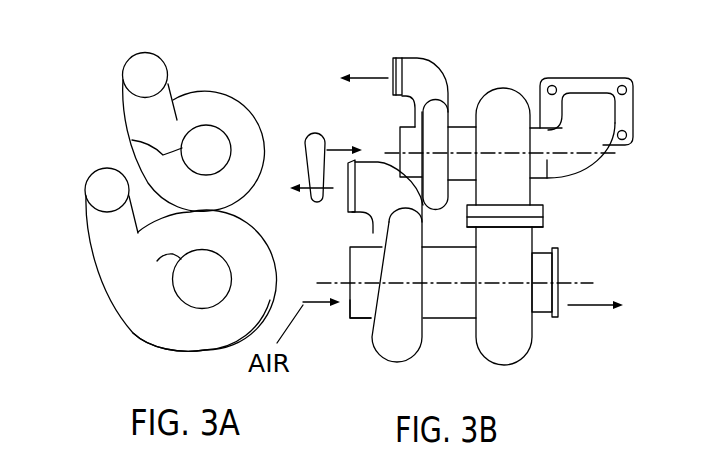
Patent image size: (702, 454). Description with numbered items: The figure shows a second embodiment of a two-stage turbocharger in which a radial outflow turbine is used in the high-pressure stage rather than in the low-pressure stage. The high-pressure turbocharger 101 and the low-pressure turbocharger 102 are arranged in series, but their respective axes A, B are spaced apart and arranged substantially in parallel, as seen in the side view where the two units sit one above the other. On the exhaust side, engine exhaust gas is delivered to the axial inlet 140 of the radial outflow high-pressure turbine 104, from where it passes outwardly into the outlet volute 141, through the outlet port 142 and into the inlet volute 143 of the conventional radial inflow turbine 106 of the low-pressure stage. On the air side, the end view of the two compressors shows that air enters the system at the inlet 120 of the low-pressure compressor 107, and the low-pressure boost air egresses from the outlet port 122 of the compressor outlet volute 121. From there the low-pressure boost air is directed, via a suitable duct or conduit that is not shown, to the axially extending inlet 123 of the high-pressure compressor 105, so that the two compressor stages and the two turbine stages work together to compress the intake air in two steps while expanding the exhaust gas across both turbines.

In FIG. 3B, the high-pressure turbocharger 101 is at (505, 84).
In FIG. 3B, the low-pressure turbocharger 102 is at (507, 372).
In FIG. 3B, the radial outflow high-pressure turbine 104 is at (485, 97).
In FIG. 3A, the high-pressure compressor 105 is at (198, 102).
In FIG. 3B, the high-pressure compressor 105 is at (430, 62).
In FIG. 3B, the radial inflow turbine 106 is at (533, 333).
In FIG. 3A, the low-pressure compressor 107 is at (137, 297).
In FIG. 3B, the low-pressure compressor 107 is at (377, 230).
In FIG. 3A, the inlet 120 is at (149, 264).
In FIG. 3B, the inlet 120 is at (358, 307).
In FIG. 3A, the compressor outlet volute 121 is at (172, 325).
In FIG. 3B, the compressor outlet volute 121 is at (397, 338).
In FIG. 3A, the outlet port 122 is at (95, 172).
In FIG. 3B, the outlet port 122 is at (352, 210).
In FIG. 3A, the axially extending inlet 123 is at (132, 140).
In FIG. 3B, the axially extending inlet 123 is at (407, 133).
In FIG. 3B, the axial inlet 140 is at (548, 178).
In FIG. 3B, the outlet volute 141 is at (522, 190).
In FIG. 3B, the outlet port 142 is at (533, 195).
In FIG. 3B, the inlet volute 143 is at (537, 240).
In FIG. 3B, the axis A is at (608, 153).
In FIG. 3B, the axis B is at (575, 283).